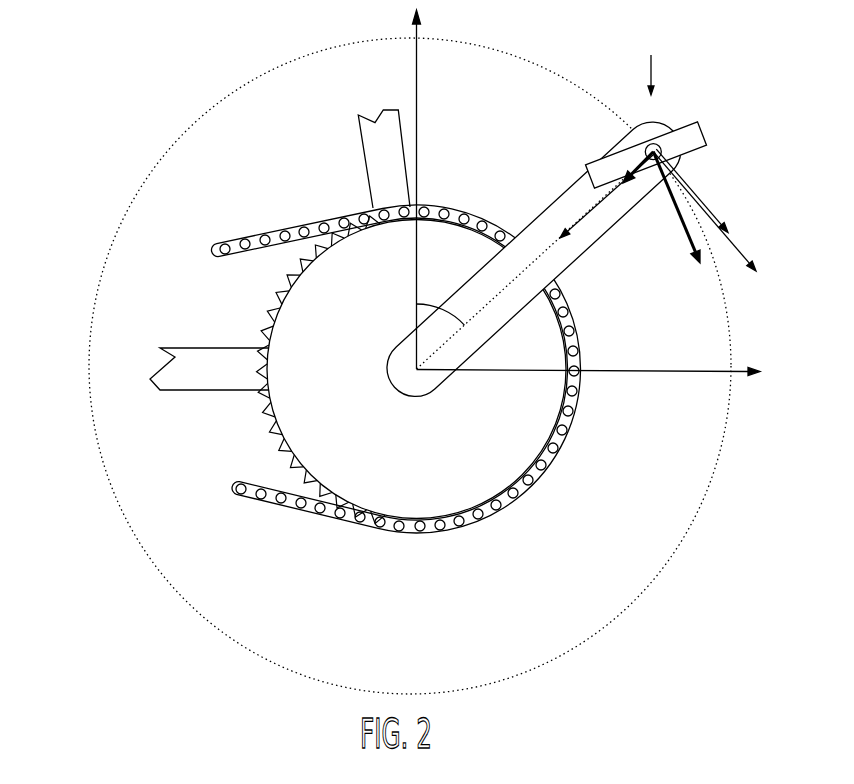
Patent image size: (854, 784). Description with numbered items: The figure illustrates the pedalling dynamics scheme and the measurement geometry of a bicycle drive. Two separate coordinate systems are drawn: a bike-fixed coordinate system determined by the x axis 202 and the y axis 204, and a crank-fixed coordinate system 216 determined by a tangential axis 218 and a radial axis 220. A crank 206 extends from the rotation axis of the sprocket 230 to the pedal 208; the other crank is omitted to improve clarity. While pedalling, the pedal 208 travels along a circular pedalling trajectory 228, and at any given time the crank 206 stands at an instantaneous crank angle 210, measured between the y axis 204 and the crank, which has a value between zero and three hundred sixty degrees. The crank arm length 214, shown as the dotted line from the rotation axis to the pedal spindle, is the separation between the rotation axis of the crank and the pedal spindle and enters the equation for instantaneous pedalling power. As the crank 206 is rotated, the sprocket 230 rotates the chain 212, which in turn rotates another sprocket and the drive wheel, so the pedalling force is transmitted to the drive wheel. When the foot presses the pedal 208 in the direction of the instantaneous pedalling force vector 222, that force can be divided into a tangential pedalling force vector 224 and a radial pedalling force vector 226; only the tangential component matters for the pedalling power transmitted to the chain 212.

The x axis 202 is at (673, 374).
The y axis 204 is at (418, 66).
The crank 206 is at (570, 189).
The pedal 208 is at (707, 134).
The instantaneous crank angle 210 is at (440, 299).
The chain 212 is at (265, 232).
The crank arm length 214 is at (523, 283).
The crank-fixed coordinate system 216 is at (651, 61).
The tangential axis 218 is at (745, 267).
The radial axis 220 is at (587, 212).
The instantaneous pedalling force vector 222 is at (690, 248).
The tangential pedalling force vector 224 is at (710, 206).
The radial pedalling force vector 226 is at (657, 190).
The pedalling trajectory 228 is at (88, 359).
The sprocket 230 is at (380, 411).